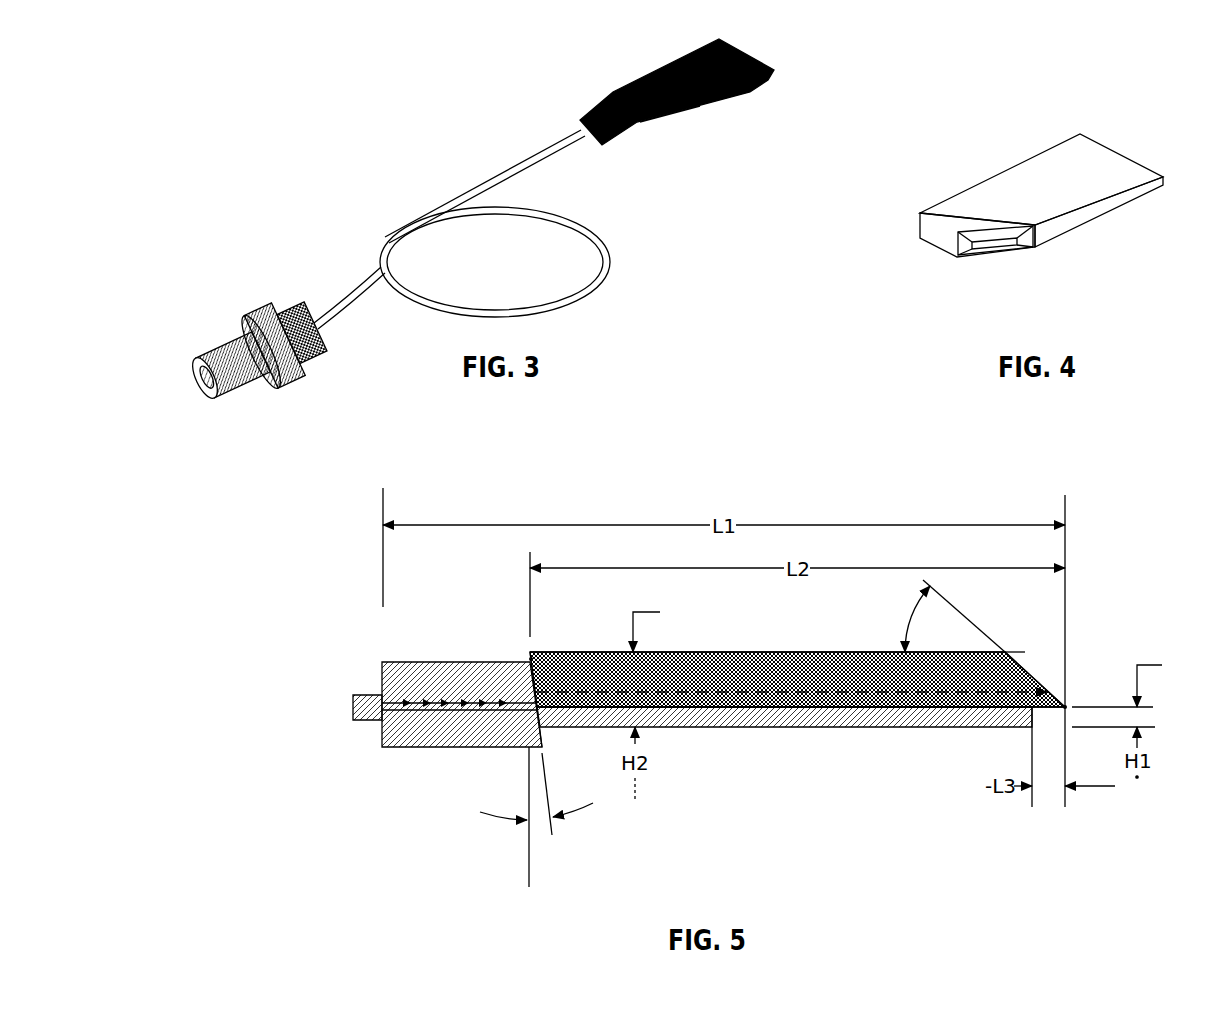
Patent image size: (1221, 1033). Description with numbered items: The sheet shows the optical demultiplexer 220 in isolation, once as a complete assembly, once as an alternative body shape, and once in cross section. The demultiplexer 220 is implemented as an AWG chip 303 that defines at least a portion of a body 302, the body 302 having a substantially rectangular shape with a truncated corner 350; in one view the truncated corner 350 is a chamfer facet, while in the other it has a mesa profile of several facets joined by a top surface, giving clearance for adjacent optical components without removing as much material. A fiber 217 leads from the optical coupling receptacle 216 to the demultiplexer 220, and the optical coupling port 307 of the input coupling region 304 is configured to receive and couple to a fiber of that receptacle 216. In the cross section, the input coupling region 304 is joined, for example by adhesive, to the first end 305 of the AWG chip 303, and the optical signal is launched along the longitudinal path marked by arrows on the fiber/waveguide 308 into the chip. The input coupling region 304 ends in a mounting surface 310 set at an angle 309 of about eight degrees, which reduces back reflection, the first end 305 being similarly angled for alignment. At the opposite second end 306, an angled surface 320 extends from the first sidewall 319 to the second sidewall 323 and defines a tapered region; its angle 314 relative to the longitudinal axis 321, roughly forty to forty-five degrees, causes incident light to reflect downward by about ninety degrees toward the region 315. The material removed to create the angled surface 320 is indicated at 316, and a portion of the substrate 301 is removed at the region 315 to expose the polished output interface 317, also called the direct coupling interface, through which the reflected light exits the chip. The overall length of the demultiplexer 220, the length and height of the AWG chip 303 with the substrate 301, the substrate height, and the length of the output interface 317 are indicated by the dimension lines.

In FIG. 3, the optical coupling receptacle 216 is at (225, 330).
In FIG. 3, the fiber 217 is at (463, 188).
In FIG. 3, the optical demultiplexer 220 is at (684, 113).
In FIG. 4, the optical demultiplexer 220 is at (1036, 225).
In FIG. 5, the optical demultiplexer 220 is at (738, 653).
In FIG. 3, the body 302 is at (725, 60).
In FIG. 4, the body 302 is at (1087, 155).
In FIG. 3, the truncated corner 350 is at (667, 128).
In FIG. 4, the truncated corner 350 is at (1012, 253).
In FIG. 5, the substrate 301 is at (750, 721).
In FIG. 5, the AWG chip 303 is at (728, 645).
In FIG. 5, the input coupling region 304 is at (425, 663).
In FIG. 5, the first end 305 is at (533, 653).
In FIG. 5, the second end 306 is at (1007, 652).
In FIG. 5, the optical coupling port 307 is at (357, 677).
In FIG. 5, the fiber/waveguide 308 is at (397, 706).
In FIG. 5, the angle 309 is at (578, 813).
In FIG. 5, the mounting surface 310 is at (528, 658).
In FIG. 5, the angle 314 is at (912, 628).
In FIG. 5, the region 315 is at (1037, 722).
In FIG. 5, the removed region 316 is at (1060, 678).
In FIG. 5, the output interface 317 is at (1047, 708).
In FIG. 5, the first sidewall 319 is at (803, 648).
In FIG. 5, the angled surface 320 is at (1030, 672).
In FIG. 5, the longitudinal axis 321 is at (755, 693).
In FIG. 5, the second sidewall 323 is at (815, 708).